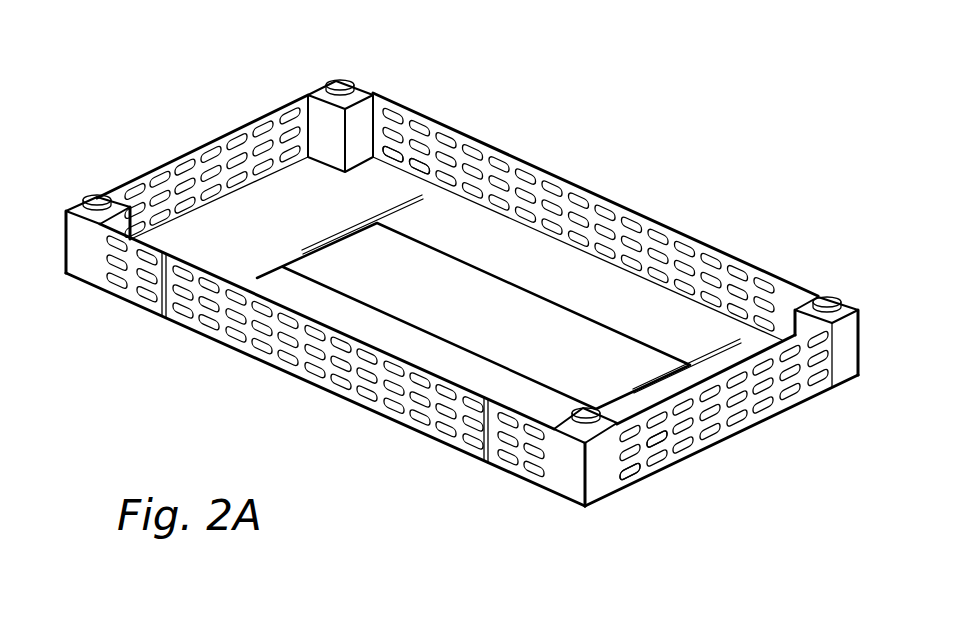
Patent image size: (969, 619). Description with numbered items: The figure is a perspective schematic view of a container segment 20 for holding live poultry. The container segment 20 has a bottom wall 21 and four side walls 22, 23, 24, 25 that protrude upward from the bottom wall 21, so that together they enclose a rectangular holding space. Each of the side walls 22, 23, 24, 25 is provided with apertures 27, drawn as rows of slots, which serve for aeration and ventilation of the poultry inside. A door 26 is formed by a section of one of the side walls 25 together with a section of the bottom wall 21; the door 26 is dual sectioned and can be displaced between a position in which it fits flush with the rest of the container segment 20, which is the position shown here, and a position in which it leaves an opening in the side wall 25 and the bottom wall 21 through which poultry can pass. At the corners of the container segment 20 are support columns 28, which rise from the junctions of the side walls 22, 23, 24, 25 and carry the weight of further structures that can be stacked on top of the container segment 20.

The container segment 20 is at (104, 63).
The bottom wall 21 is at (644, 302).
The side wall 22 is at (226, 127).
The side wall 23 is at (600, 185).
The side wall 24 is at (750, 440).
The side wall 25 is at (508, 478).
The door 26 is at (286, 384).
The apertures 27 is at (428, 160).
The support columns 28 is at (97, 199).